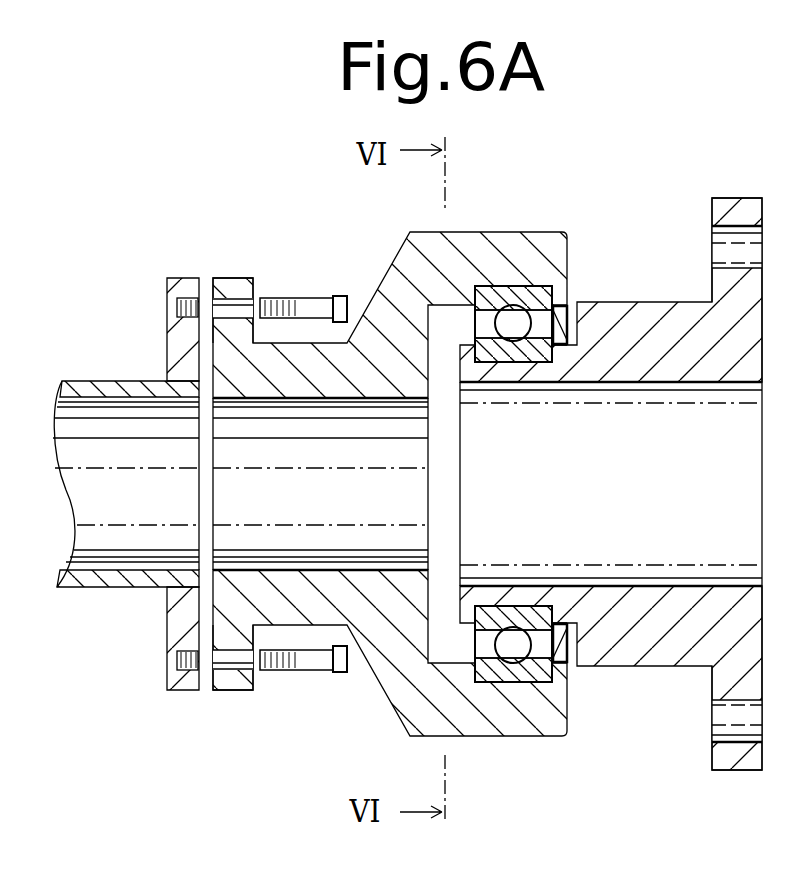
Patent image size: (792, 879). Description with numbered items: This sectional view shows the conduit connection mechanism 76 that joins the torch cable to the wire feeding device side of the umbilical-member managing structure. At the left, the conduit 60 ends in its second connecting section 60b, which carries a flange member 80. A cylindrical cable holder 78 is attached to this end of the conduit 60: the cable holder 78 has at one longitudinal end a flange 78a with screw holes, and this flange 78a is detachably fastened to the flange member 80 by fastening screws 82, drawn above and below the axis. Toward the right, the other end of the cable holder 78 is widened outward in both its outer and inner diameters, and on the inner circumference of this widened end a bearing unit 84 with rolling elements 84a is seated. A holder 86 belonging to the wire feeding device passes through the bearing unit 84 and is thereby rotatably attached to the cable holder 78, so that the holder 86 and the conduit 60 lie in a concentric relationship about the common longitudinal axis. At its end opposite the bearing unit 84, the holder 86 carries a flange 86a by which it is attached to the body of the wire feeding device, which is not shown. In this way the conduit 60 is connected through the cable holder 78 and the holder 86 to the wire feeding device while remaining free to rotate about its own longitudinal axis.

The conduit 60 is at (103, 392).
The second connecting section 60b is at (122, 588).
The conduit connection mechanism 76 is at (276, 230).
The cable holder 78 is at (412, 695).
The flange 78a is at (237, 292).
The flange member 80 is at (182, 676).
The fastening screws 82 is at (340, 296).
The bearing unit 84 is at (568, 643).
The rolling elements 84a is at (515, 664).
The holder 86 is at (672, 347).
The flange 86a is at (735, 210).